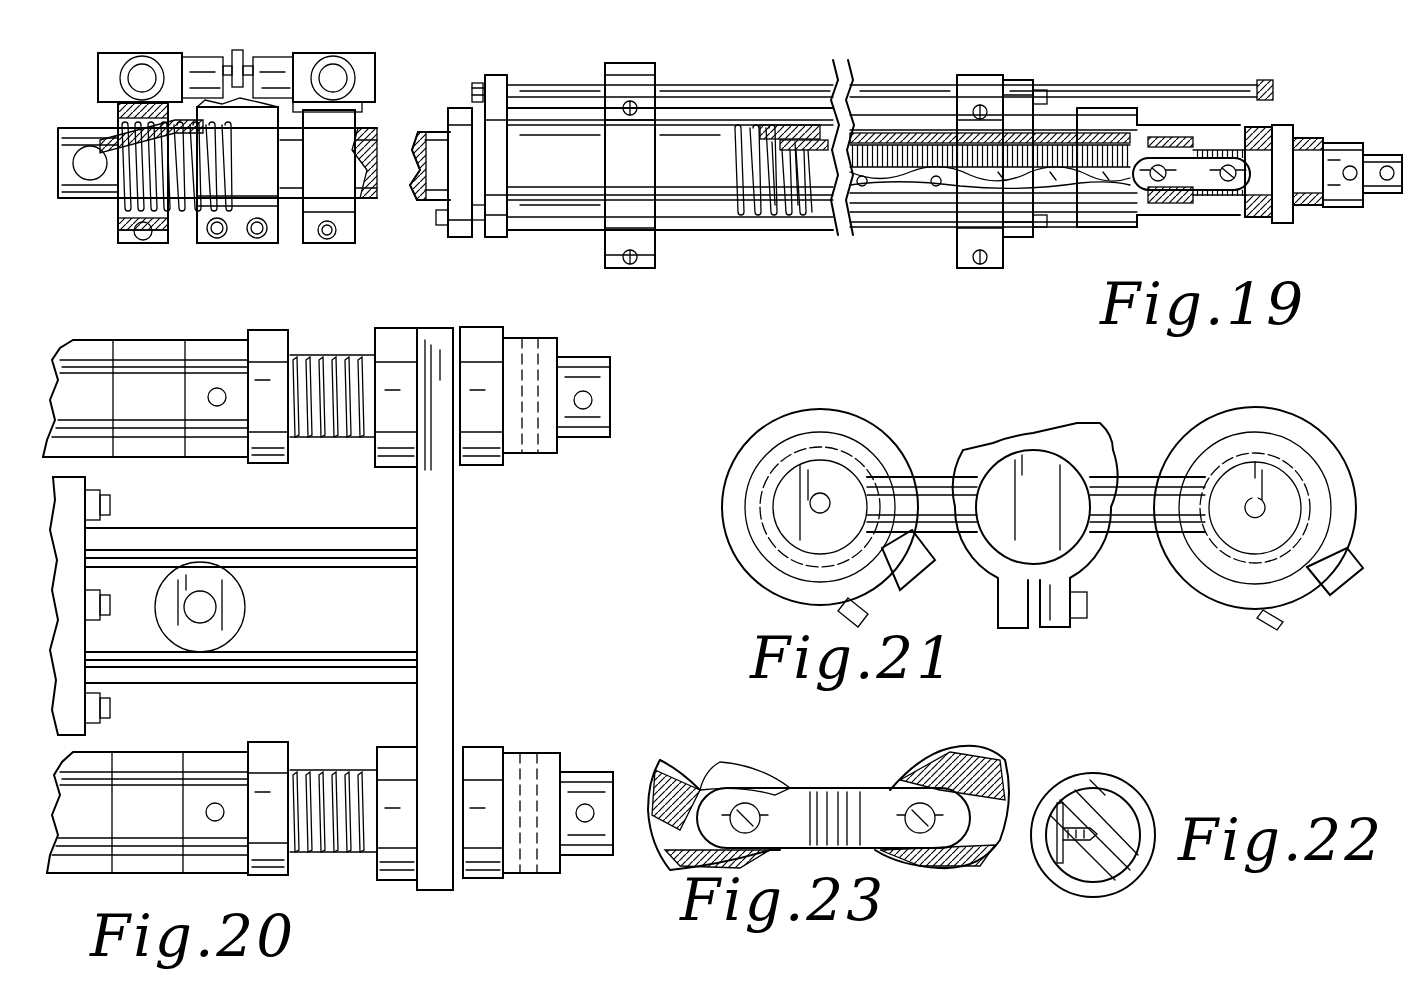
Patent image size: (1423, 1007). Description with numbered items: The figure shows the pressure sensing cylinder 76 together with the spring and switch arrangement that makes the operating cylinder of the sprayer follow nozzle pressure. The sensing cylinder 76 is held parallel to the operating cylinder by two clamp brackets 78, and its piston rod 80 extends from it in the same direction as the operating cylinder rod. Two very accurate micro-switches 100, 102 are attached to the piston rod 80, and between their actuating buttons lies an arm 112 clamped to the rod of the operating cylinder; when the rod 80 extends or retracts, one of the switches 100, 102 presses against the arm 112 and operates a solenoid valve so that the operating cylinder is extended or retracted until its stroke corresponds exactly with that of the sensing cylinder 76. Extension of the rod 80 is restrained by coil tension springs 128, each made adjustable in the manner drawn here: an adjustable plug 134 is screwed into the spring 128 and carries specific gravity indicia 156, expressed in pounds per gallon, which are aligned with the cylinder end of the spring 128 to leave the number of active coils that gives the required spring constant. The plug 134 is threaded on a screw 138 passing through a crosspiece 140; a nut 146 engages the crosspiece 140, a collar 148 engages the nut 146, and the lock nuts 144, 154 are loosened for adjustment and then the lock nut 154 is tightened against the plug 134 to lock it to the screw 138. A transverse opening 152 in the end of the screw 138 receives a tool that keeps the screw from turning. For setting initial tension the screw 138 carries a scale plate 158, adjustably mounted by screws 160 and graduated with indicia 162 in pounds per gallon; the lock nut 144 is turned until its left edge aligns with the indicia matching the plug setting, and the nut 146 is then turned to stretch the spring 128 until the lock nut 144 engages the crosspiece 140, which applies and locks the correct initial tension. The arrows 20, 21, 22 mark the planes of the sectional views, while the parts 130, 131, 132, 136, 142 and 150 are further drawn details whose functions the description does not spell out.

In FIG. 19, the section line 20 is at (1023, 43).
In FIG. 19, the section line 21 is at (48, 108).
In FIG. 19, the section line 22 is at (1175, 90).
In FIG. 19, the pressure sensing cylinder 76 is at (755, 228).
In FIG. 19, the clamp brackets 78 is at (632, 270).
In FIG. 19, the piston rod 80 is at (435, 205).
In FIG. 21, the piston rod 80 is at (993, 550).
In FIG. 19, the micro-switch 100 is at (362, 55).
In FIG. 19, the micro-switch 102 is at (118, 53).
In FIG. 19, the arm 112 is at (243, 57).
In FIG. 19, the spring 128 is at (197, 218).
In FIG. 21, the spring 128 is at (867, 440).
In FIG. 19, the spring seat 130 is at (120, 135).
In FIG. 21, the spring seat 130 is at (840, 447).
In FIG. 19, the shaft 131 is at (92, 180).
In FIG. 21, the shaft 131 is at (1130, 540).
In FIG. 19, the flange 132 is at (158, 236).
In FIG. 21, the flange 132 is at (790, 598).
In FIG. 19, the adjustable plug 134 is at (870, 96).
In FIG. 20, the adjustable plug 134 is at (222, 340).
In FIG. 19, the housing 136 is at (1140, 140).
In FIG. 19, the screw 138 is at (1215, 160).
In FIG. 20, the screw 138 is at (330, 355).
In FIG. 22, the screw 138 is at (1130, 795).
In FIG. 23, the screw 138 is at (975, 760).
In FIG. 19, the crosspiece 140 is at (1283, 225).
In FIG. 20, the crosspiece 140 is at (455, 525).
In FIG. 19, the end block 142 is at (1020, 240).
In FIG. 20, the end block 142 is at (105, 550).
In FIG. 19, the lock nut 144 is at (1255, 127).
In FIG. 20, the lock nut 144 is at (393, 330).
In FIG. 19, the lock nut 146 is at (1300, 140).
In FIG. 20, the lock nut 146 is at (477, 328).
In FIG. 19, the collar 148 is at (1345, 208).
In FIG. 20, the collar 148 is at (540, 455).
In FIG. 19, the hole 150 is at (1350, 166).
In FIG. 19, the transverse opening 152 is at (1390, 165).
In FIG. 20, the transverse opening 152 is at (578, 392).
In FIG. 19, the lock nut 154 is at (1185, 200).
In FIG. 20, the lock nut 154 is at (283, 464).
In FIG. 19, the specific gravity indicia 156 is at (935, 182).
In FIG. 20, the specific gravity indicia 156 is at (185, 352).
In FIG. 19, the scale plate 158 is at (1190, 150).
In FIG. 22, the scale plate 158 is at (1058, 865).
In FIG. 23, the scale plate 158 is at (888, 795).
In FIG. 19, the screws 160 is at (1193, 173).
In FIG. 22, the screws 160 is at (1060, 820).
In FIG. 23, the screws 160 is at (755, 808).
In FIG. 23, the indicia 162 is at (848, 790).